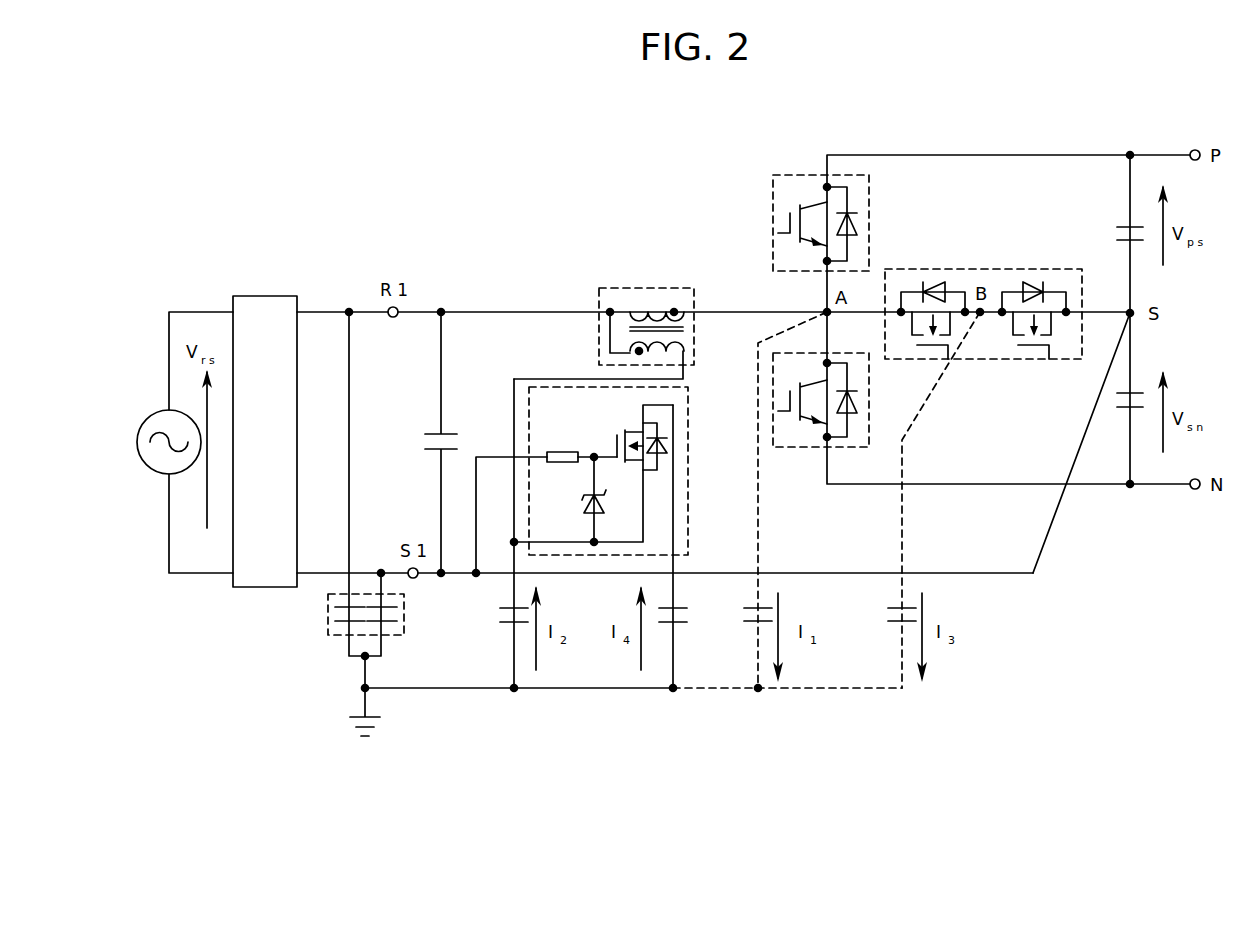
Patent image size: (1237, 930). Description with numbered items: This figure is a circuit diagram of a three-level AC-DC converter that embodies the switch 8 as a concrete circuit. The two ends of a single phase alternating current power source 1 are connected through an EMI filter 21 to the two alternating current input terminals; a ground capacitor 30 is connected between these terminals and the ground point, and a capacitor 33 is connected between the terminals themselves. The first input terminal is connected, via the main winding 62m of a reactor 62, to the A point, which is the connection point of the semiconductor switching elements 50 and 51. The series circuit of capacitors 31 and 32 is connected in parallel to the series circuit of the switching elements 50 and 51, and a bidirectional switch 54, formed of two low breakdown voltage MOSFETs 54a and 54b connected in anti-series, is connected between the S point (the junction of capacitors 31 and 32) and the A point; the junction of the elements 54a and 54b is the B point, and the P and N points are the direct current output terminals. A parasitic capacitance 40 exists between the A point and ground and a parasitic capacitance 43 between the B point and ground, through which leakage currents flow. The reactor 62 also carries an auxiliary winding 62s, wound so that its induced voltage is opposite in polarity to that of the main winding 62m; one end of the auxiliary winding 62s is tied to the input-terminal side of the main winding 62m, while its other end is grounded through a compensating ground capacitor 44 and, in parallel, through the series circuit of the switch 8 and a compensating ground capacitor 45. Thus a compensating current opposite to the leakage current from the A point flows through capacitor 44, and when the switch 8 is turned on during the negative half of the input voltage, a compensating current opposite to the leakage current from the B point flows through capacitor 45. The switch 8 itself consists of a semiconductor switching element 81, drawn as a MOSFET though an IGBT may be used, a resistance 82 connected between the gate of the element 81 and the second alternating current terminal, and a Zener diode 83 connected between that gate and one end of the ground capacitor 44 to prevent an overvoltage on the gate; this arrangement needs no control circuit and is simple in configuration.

The single phase alternating current power source 1 is at (155, 462).
The EMI filter 21 is at (261, 302).
The ground capacitor 30 is at (330, 637).
The capacitor 33 is at (425, 458).
The switch 8 is at (595, 480).
The semiconductor switching element 81 is at (615, 442).
The resistance 82 is at (560, 450).
The Zener diode 83 is at (582, 505).
The reactor 62 is at (626, 319).
The main winding 62m is at (655, 310).
The auxiliary winding 62s is at (660, 348).
The compensating ground capacitor 44 is at (503, 628).
The compensating ground capacitor 45 is at (663, 628).
The parasitic capacitance 40 is at (748, 628).
The parasitic capacitance 43 is at (890, 628).
The semiconductor switching element 50 is at (791, 174).
The semiconductor switching element 51 is at (790, 450).
The bidirectional switch 54 is at (980, 309).
The semiconductor switching element 54a is at (912, 343).
The semiconductor switching element 54b is at (1035, 353).
The capacitor 31 is at (1120, 223).
The capacitor 32 is at (1115, 410).